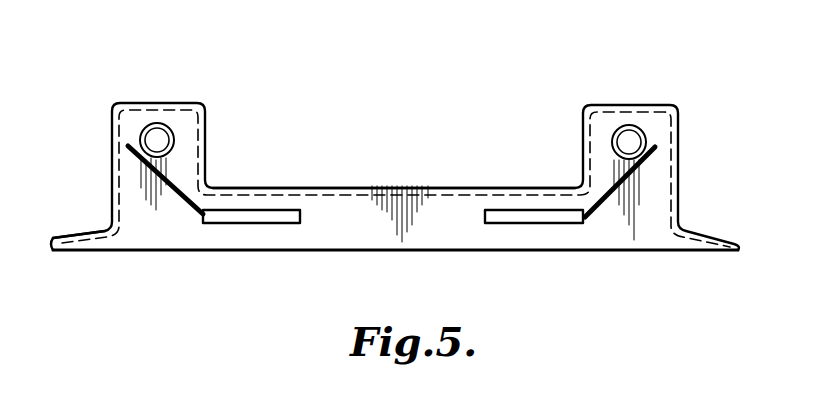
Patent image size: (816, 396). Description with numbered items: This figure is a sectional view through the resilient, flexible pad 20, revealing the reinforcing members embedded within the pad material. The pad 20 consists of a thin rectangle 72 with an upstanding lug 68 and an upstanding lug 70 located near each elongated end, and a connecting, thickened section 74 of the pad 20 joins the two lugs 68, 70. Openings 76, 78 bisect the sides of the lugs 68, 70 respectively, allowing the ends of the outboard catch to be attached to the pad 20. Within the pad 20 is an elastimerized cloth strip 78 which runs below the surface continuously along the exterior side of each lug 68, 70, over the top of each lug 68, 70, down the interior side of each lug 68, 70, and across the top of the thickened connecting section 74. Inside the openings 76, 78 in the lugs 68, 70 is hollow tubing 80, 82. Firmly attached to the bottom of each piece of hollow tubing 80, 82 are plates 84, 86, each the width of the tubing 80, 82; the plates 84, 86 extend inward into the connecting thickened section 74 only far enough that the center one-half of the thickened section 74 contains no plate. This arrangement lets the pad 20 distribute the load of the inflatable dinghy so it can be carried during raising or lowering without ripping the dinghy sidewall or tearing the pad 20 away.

The resilient, flexible pad 20 is at (328, 254).
The upstanding lug 68 is at (130, 123).
The upstanding lug 70 is at (655, 126).
The thin rectangle 72 is at (84, 250).
The connecting, thickened section 74 is at (345, 205).
The opening 76 is at (157, 139).
The elastimerized cloth strip 78 is at (627, 141).
The hollow tubing 80 is at (168, 131).
The hollow tubing 82 is at (615, 131).
The plate 84 is at (205, 220).
The plate 86 is at (583, 223).